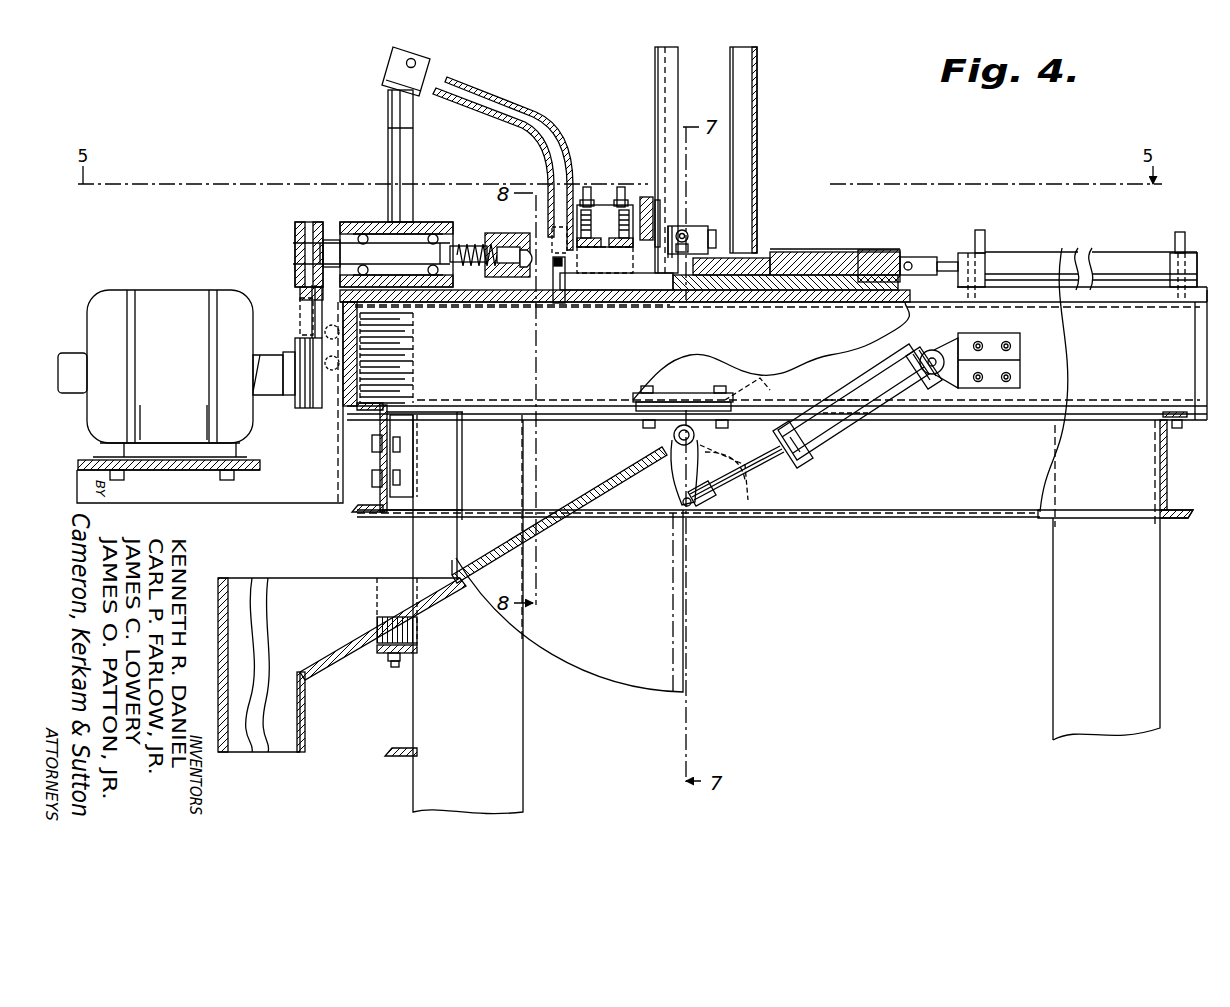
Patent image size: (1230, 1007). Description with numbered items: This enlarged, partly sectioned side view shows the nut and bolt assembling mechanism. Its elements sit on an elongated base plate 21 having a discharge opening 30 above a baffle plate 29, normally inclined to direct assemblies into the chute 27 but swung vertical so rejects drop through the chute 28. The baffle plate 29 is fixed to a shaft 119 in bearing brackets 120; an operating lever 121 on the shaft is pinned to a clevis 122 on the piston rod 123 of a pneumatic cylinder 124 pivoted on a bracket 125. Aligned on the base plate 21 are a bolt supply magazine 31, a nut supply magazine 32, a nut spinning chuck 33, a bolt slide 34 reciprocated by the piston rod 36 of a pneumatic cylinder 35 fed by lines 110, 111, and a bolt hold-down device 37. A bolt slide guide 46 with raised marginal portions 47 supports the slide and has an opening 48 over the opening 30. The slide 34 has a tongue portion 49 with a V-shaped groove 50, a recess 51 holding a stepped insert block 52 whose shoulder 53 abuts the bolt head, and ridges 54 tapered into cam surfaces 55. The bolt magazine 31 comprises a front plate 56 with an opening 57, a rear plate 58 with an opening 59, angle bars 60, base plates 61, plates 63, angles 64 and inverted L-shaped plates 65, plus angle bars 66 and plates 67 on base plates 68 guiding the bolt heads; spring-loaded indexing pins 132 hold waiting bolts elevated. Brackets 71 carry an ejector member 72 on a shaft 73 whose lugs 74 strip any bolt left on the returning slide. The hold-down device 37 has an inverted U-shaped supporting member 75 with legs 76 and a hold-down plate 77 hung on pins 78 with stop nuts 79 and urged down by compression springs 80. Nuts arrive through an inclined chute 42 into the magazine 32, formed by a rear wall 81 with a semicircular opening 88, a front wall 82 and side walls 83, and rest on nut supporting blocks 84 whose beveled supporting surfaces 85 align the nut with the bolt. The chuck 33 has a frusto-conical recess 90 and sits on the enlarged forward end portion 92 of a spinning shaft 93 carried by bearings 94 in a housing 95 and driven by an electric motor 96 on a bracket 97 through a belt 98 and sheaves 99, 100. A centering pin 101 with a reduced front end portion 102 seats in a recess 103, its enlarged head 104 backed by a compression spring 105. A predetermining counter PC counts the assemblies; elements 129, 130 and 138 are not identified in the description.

The predetermining counter PC is at (383, 66).
The base plate 21 is at (834, 302).
The chute 27 is at (289, 619).
The chute 28 is at (595, 589).
The baffle plate 29 is at (556, 510).
The opening 30 is at (433, 284).
The bolt supply magazine 31 is at (766, 82).
The nut supply magazine 32 is at (546, 113).
The nut spinning chuck 33 is at (508, 240).
The bolt slide 34 is at (880, 255).
The pneumatic cylinder 35 is at (1098, 254).
The piston rod 36 is at (920, 258).
The bolt hold-down device 37 is at (605, 226).
The inclined chute 42 is at (463, 82).
The bolt slide guide 46 is at (870, 302).
The raised marginal portions 47 is at (647, 258).
The opening 48 is at (614, 284).
The tongue portion 49 is at (723, 262).
The V-shaped groove 50 is at (700, 258).
The recess 51 is at (763, 292).
The insert block 52 is at (760, 258).
The shoulder 53 is at (747, 260).
The upstanding ridges 54 is at (849, 250).
The cam surfaces 55 is at (811, 250).
The plate 56 is at (655, 66).
The opening 57 is at (673, 278).
The plate 58 is at (757, 103).
The opening 59 is at (757, 253).
The vertical angle bars 60 is at (668, 102).
The base plates 61 is at (684, 285).
The plates 63 is at (690, 226).
The angles 64 is at (695, 236).
The inverted L-shaped plates 65 is at (716, 240).
The vertical angle bars 66 is at (745, 128).
The plates 67 is at (731, 115).
The base plates 68 is at (791, 293).
The brackets 71 is at (658, 205).
The ejector member 72 is at (673, 228).
The shaft 73 is at (641, 209).
The lugs 74 is at (655, 282).
The supporting member 75 is at (599, 205).
The legs 76 is at (598, 272).
The hold-down plate 77 is at (602, 248).
The pins 78 is at (621, 196).
The stop nuts 79 is at (587, 196).
The compression springs 80 is at (578, 213).
The wall 81 is at (570, 150).
The front wall 82 is at (540, 162).
The side walls 83 is at (522, 132).
The nut supporting blocks 84 is at (551, 292).
The beveled supporting surfaces 85 is at (519, 292).
The semicircular opening 88 is at (583, 272).
The frusto-conical recess 90 is at (543, 267).
The forward end portion 92 is at (460, 236).
The spinning shaft 93 is at (395, 240).
The bearings 94 is at (428, 280).
The housing 95 is at (343, 230).
The electric motor 96 is at (150, 366).
The bracket 97 is at (205, 472).
The belt 98 is at (315, 318).
The sheave 99 is at (305, 410).
The sheave 100 is at (302, 286).
The centering pin 101 is at (502, 280).
The front end portion 102 is at (532, 268).
The cylindrical recess 103 is at (480, 268).
The enlarged head 104 is at (505, 235).
The compression spring 105 is at (455, 280).
The line 110 is at (985, 238).
The line 111 is at (1175, 240).
The shaft 119 is at (673, 436).
The bearing brackets 120 is at (637, 414).
The operating lever 121 is at (677, 474).
The clevis 122 is at (693, 508).
The piston rod 123 is at (730, 474).
The pneumatic cylinder 124 is at (868, 390).
The bracket 125 is at (956, 340).
The rod end 129 is at (924, 386).
The clamp 130 is at (812, 456).
The indexing pins 132 is at (684, 228).
The pin 138 is at (678, 266).